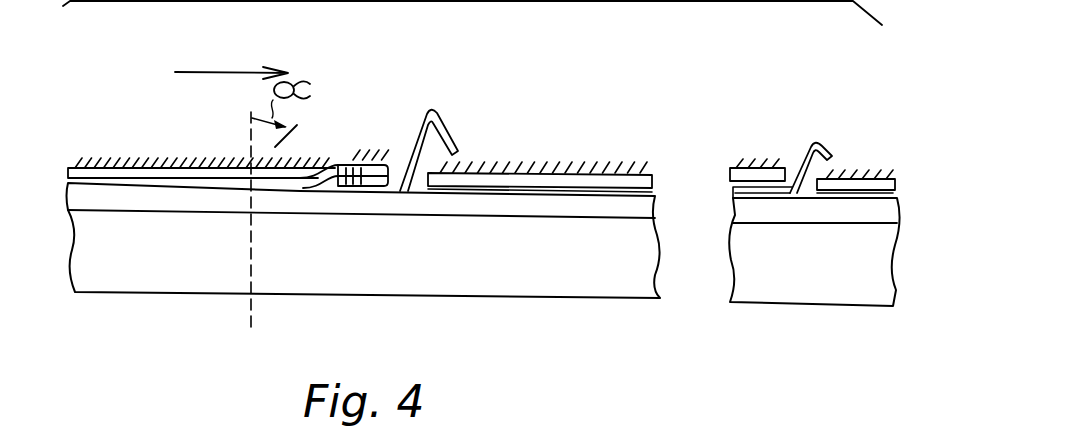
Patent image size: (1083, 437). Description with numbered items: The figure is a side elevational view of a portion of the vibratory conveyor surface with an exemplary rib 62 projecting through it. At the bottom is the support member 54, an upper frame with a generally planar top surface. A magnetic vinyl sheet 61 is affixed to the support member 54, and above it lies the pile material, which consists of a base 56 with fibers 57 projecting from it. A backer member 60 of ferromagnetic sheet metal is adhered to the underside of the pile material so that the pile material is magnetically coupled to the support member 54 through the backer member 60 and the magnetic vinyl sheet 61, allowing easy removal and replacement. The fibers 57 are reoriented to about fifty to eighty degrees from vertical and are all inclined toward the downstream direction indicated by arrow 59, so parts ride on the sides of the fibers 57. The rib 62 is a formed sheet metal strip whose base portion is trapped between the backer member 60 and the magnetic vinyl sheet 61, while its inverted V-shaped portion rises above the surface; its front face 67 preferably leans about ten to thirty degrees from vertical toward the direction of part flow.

The support member 54 is at (327, 287).
The base 56 is at (80, 169).
The fibers 57 is at (174, 156).
The arrow 59 is at (213, 72).
The backer member 60 is at (92, 184).
The magnetic vinyl sheet 61 is at (542, 208).
The rib 62 is at (436, 112).
The front face 67 is at (413, 132).